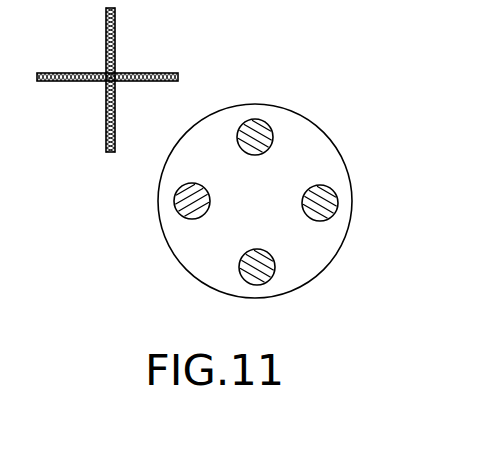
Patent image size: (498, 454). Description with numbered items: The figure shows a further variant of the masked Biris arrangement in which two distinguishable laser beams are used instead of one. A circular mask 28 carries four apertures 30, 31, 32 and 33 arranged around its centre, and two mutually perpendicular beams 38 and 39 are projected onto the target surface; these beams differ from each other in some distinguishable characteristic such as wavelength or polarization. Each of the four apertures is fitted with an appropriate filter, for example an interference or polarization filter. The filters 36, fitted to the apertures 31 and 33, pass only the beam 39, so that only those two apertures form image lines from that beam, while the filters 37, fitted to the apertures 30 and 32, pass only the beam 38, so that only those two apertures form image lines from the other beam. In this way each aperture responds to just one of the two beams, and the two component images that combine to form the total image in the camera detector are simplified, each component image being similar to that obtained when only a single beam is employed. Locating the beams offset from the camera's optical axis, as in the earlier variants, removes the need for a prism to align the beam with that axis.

The mask 28 is at (310, 148).
The aperture 30 is at (268, 128).
The aperture 31 is at (325, 201).
The aperture 32 is at (262, 272).
The aperture 33 is at (181, 212).
The filter 36 is at (179, 193).
The filter 37 is at (245, 127).
The beam 38 is at (70, 82).
The beam 39 is at (106, 63).